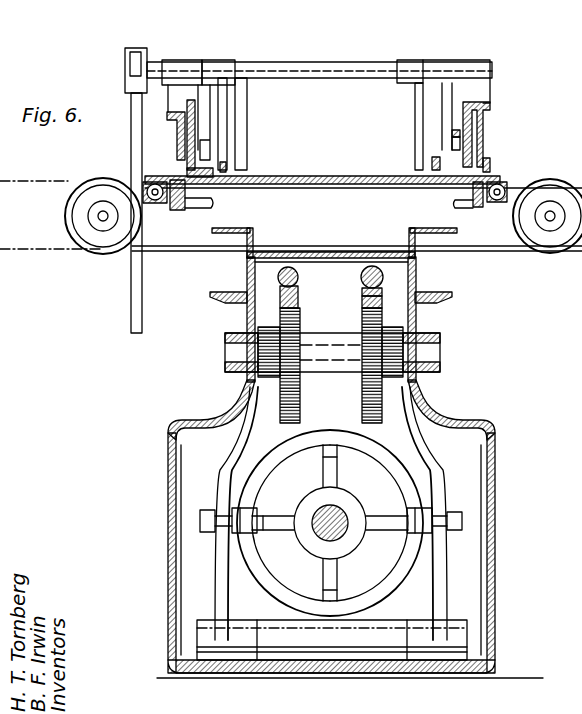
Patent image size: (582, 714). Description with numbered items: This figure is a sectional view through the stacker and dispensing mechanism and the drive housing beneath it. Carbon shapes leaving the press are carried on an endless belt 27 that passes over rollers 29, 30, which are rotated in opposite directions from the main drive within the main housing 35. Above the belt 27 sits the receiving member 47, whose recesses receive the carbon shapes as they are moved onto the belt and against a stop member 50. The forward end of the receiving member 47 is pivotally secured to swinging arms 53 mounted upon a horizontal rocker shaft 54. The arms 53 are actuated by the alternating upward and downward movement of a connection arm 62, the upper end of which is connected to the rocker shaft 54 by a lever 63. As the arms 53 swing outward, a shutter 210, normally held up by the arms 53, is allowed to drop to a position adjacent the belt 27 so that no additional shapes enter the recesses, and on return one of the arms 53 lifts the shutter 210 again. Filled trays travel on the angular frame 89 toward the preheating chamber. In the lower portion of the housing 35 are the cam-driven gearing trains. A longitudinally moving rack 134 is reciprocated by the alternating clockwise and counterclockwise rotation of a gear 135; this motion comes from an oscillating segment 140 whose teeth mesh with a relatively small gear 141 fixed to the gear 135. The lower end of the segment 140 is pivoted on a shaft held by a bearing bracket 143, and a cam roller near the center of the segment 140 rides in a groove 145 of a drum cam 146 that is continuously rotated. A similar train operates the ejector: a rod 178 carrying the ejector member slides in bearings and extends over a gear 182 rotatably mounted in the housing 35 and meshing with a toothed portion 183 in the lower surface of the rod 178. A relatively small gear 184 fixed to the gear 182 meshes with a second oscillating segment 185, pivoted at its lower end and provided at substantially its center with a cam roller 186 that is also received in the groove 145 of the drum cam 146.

The endless belt 27 is at (175, 252).
The roller 29 is at (545, 252).
The roller 30 is at (100, 250).
The main housing 35 is at (453, 420).
The receiving member 47 is at (324, 172).
The stop member 50 is at (186, 160).
The swinging arms 53 is at (243, 128).
The horizontal rocker shaft 54 is at (334, 63).
The connection arm 62 is at (134, 142).
The lever 63 is at (136, 50).
The angular frame 89 is at (207, 207).
The rack 134 is at (283, 270).
The gear 135 is at (286, 327).
The oscillating segment 140 is at (236, 463).
The small gear 141 is at (256, 384).
The bearing bracket 143 is at (317, 642).
The groove 145 is at (247, 550).
The drum cam 146 is at (410, 562).
The rod 178 is at (367, 268).
The gear 182 is at (364, 295).
The toothed portion 183 is at (373, 290).
The small gear 184 is at (414, 323).
The oscillating segment 185 is at (420, 392).
The cam roller 186 is at (418, 518).
The shutter 210 is at (478, 108).